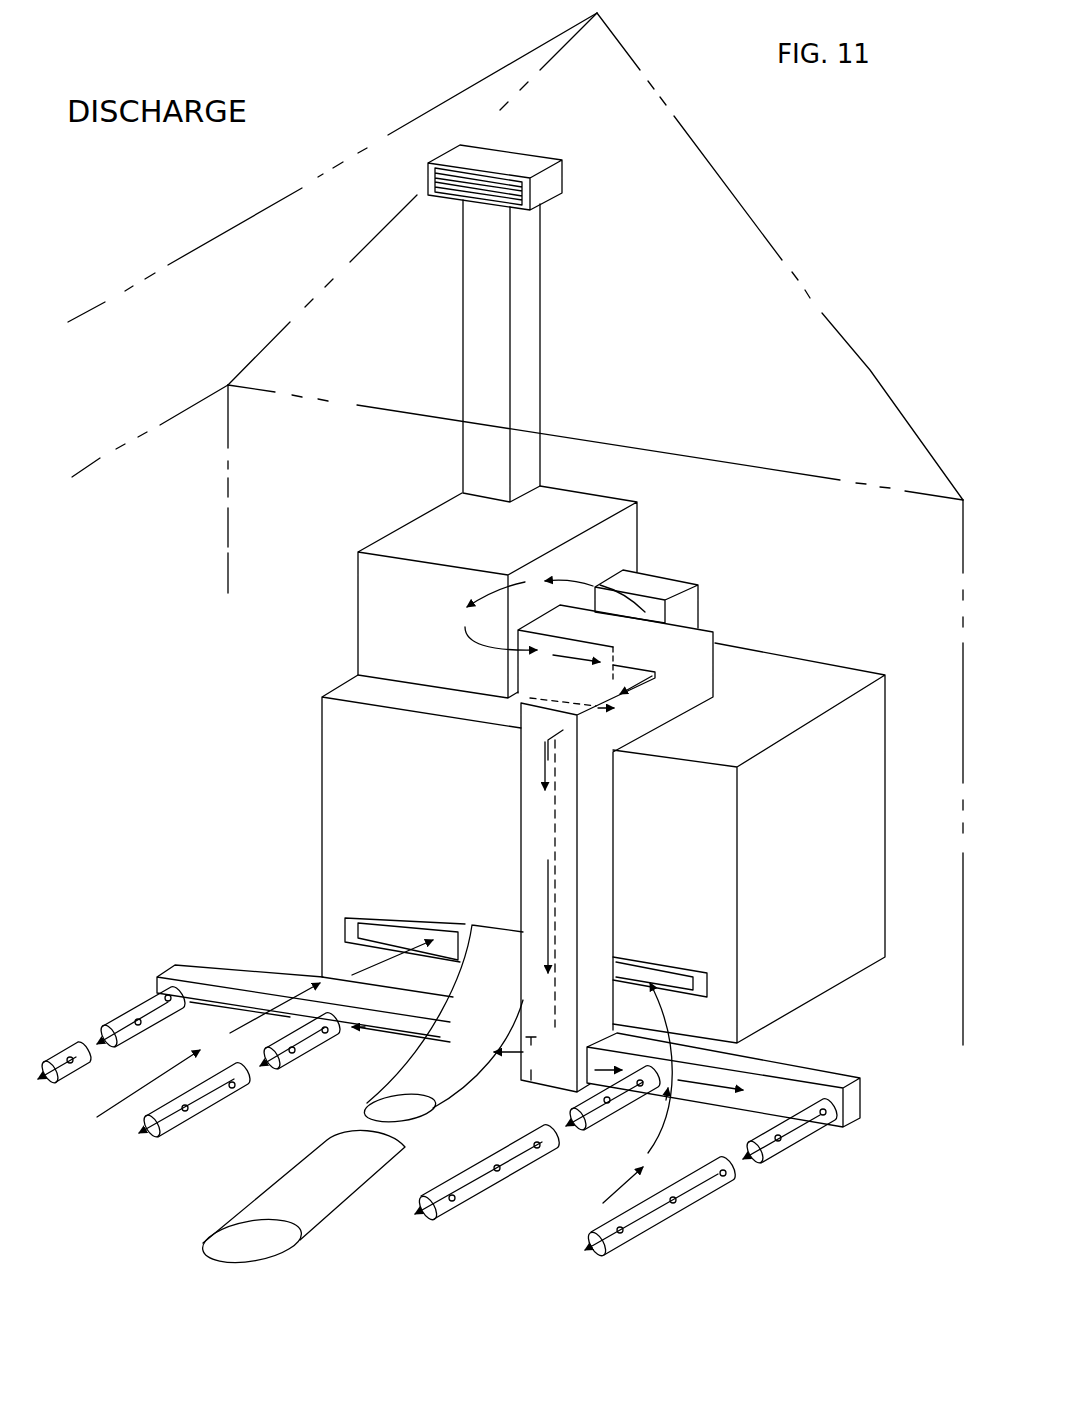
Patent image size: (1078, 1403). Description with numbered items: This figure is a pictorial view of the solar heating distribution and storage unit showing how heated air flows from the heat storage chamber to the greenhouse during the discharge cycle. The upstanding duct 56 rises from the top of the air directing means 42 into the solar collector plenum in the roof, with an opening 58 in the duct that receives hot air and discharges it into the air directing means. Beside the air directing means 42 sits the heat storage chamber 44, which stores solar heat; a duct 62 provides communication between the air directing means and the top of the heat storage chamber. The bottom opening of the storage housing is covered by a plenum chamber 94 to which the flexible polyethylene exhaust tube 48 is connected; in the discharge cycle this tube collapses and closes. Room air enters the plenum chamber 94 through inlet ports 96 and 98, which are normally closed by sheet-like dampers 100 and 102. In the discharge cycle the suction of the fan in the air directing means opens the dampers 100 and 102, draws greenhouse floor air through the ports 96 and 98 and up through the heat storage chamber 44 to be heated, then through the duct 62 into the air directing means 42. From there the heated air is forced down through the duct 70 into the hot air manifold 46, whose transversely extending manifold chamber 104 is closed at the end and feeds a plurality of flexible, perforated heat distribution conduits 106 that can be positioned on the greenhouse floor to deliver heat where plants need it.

The air directing means 42 is at (380, 538).
The heat storage chamber 44 is at (852, 668).
The hot air manifold 46 is at (218, 966).
The exhaust tube 48 is at (448, 1092).
The upstanding duct 56 is at (545, 277).
The opening 58 is at (500, 180).
The duct 62 is at (683, 575).
The duct 70 is at (615, 855).
The plenum chamber 94 is at (402, 920).
The inlet port 96 is at (373, 920).
The inlet port 98 is at (648, 960).
The damper 100 is at (448, 948).
The damper 102 is at (679, 995).
The manifold chamber 104 is at (813, 1067).
The heat distribution conduit 106 is at (667, 1218).